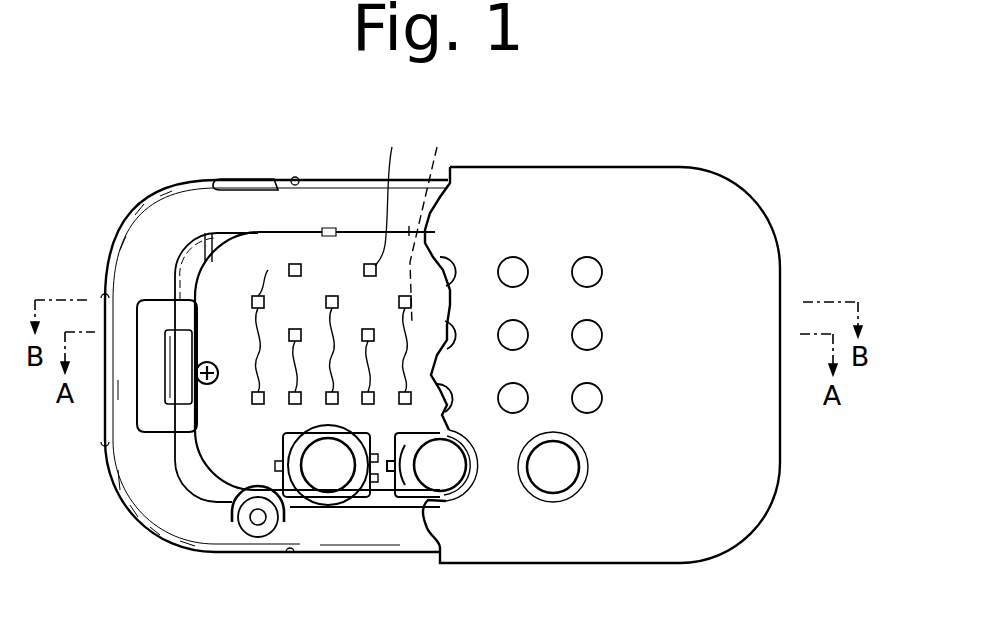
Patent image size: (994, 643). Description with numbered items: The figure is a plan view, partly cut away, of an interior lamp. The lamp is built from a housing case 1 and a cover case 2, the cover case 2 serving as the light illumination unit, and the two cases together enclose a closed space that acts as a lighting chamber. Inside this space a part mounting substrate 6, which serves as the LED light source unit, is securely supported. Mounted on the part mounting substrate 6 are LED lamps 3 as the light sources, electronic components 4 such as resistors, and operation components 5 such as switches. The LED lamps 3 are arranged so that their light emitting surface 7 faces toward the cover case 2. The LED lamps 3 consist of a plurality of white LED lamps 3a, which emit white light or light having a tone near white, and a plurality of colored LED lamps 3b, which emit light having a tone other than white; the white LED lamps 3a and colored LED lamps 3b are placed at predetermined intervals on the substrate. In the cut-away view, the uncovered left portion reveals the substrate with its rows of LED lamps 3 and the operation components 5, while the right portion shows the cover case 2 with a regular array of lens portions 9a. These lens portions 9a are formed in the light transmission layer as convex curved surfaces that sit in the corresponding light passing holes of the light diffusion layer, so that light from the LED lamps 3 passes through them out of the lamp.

The housing case 1 is at (318, 180).
The cover case 2 is at (601, 335).
The LED lamps 3 is at (257, 265).
The white LED lamps 3a is at (368, 370).
The colored LED lamps 3b is at (320, 350).
The electronic components 4 is at (431, 219).
The operation components 5 is at (330, 483).
The part mounting substrate 6 is at (237, 253).
The light emitting surface 7 is at (330, 203).
The lens portions 9a is at (585, 270).